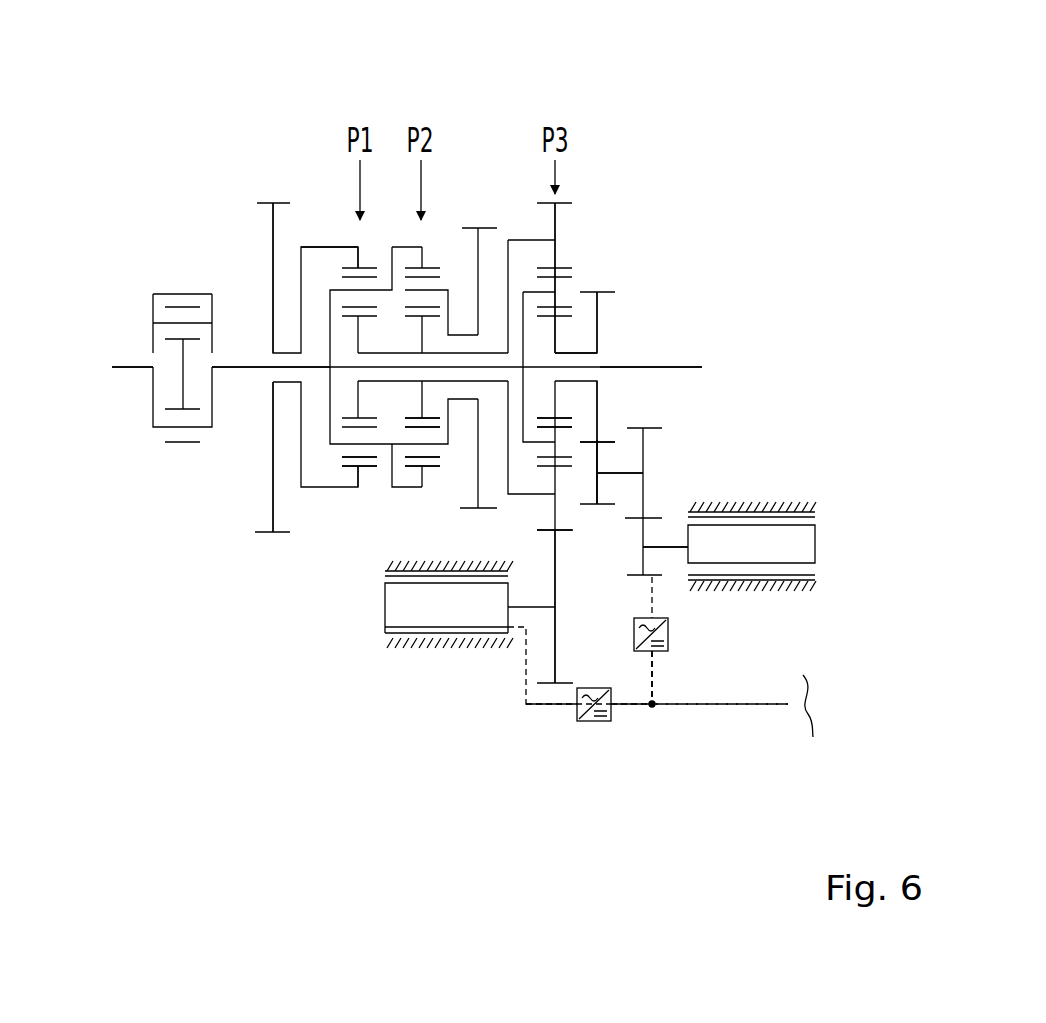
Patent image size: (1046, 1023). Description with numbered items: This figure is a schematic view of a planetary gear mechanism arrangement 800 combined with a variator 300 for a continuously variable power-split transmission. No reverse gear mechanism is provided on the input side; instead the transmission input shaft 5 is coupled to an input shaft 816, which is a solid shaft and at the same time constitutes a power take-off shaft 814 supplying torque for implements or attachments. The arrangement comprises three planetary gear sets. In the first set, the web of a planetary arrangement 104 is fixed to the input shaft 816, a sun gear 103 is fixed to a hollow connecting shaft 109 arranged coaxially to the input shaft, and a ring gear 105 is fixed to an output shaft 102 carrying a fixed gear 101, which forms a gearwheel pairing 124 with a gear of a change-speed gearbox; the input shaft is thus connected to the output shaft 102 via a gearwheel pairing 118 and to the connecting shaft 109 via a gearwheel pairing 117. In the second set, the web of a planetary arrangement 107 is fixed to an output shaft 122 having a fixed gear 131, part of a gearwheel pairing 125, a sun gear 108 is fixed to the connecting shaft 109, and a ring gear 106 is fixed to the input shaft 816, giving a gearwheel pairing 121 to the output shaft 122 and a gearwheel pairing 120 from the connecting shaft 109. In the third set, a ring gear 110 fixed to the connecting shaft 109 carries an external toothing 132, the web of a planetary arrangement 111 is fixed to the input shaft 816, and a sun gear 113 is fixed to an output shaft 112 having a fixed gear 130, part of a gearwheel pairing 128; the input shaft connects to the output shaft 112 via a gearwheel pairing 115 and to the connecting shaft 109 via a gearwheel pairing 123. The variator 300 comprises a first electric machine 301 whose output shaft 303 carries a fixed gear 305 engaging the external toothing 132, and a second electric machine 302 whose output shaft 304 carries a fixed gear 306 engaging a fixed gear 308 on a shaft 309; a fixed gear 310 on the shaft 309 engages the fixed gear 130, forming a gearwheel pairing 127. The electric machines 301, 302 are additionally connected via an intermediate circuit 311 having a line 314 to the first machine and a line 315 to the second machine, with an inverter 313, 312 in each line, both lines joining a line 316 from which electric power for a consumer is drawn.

The transmission input shaft 5 is at (123, 367).
The input shaft 816 is at (248, 367).
The gearwheel pairing 117 is at (352, 432).
The sun gear 103 is at (362, 337).
The fixed gear 101 is at (270, 267).
The gearwheel pairing 124 is at (270, 196).
The output shaft 102 is at (312, 247).
The planetary arrangement 104 is at (343, 268).
The ring gear 105 is at (360, 265).
The ring gear 106 is at (422, 268).
The planetary arrangement 107 is at (425, 270).
The sun gear 108 is at (383, 300).
The output shaft 122 is at (462, 399).
The gearwheel pairing 125 is at (480, 224).
The connecting shaft 109 is at (518, 240).
The external toothing 132 is at (560, 223).
The ring gear 110 is at (575, 270).
The planetary arrangement 111 is at (599, 289).
The gearwheel pairing 128 is at (598, 320).
The fixed gear 130 is at (668, 300).
The planetary gear mechanism arrangement 800 is at (745, 135).
The sun gear 113 is at (560, 338).
The output shaft 112 is at (580, 353).
The power take-off shaft 814 is at (678, 367).
The gearwheel pairing 115 is at (567, 413).
The gearwheel pairing 127 is at (605, 432).
The fixed gear 308 is at (643, 448).
The shaft 309 is at (623, 471).
The second electric machine 302 is at (805, 550).
The output shaft 304 is at (655, 598).
The variator 300 is at (800, 644).
The first electric machine 301 is at (434, 622).
The gearwheel pairing 118 is at (350, 472).
The gearwheel pairing 120 is at (403, 435).
The gearwheel pairing 121 is at (410, 472).
The fixed gear 131 is at (540, 607).
The fixed gear 305 is at (553, 640).
The inverter 313 is at (587, 727).
The fixed gear 310 is at (597, 496).
The intermediate circuit 311 is at (668, 660).
The line 315 is at (663, 578).
The line 316 is at (788, 704).
The output shaft 303 is at (523, 655).
The line 314 is at (557, 707).
The gearwheel pairing 123 is at (558, 470).
The inverter 312 is at (656, 680).
The fixed gear 306 is at (655, 548).